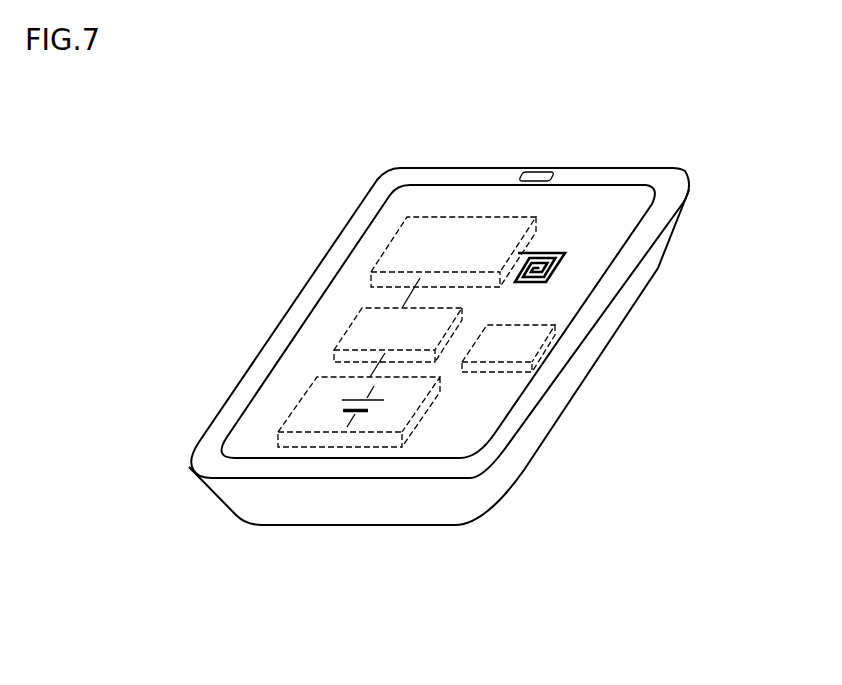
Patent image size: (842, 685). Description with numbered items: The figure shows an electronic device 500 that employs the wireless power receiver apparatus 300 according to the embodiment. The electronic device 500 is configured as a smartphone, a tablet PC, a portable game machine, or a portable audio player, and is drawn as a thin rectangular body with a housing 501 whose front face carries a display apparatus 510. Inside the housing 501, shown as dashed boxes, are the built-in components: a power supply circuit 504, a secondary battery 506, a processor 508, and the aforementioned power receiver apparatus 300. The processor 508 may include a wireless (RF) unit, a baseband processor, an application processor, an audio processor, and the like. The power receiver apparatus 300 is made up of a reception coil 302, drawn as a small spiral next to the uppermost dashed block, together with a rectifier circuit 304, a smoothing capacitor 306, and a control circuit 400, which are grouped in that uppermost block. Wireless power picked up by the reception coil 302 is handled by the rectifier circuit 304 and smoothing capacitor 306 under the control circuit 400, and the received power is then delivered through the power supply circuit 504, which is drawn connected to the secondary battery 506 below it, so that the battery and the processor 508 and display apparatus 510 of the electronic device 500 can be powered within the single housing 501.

The electronic device 500 is at (430, 667).
The housing 501 is at (510, 470).
The display apparatus 510 is at (614, 201).
The power receiver apparatus 300 is at (479, 244).
The rectifier circuit 304 is at (348, 244).
The smoothing capacitor 306 is at (348, 244).
The control circuit 400 is at (412, 252).
The reception coil 302 is at (566, 254).
The power supply circuit 504 is at (368, 337).
The secondary battery 506 is at (302, 438).
The processor 508 is at (520, 345).